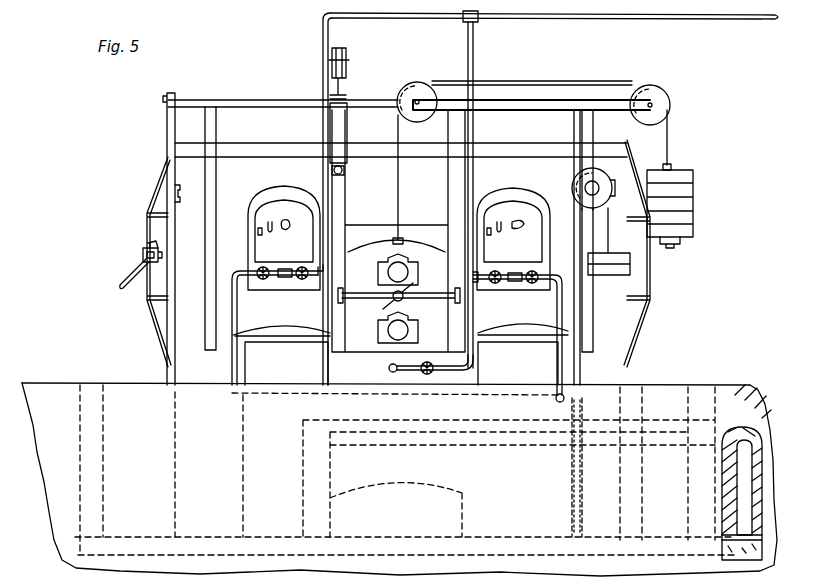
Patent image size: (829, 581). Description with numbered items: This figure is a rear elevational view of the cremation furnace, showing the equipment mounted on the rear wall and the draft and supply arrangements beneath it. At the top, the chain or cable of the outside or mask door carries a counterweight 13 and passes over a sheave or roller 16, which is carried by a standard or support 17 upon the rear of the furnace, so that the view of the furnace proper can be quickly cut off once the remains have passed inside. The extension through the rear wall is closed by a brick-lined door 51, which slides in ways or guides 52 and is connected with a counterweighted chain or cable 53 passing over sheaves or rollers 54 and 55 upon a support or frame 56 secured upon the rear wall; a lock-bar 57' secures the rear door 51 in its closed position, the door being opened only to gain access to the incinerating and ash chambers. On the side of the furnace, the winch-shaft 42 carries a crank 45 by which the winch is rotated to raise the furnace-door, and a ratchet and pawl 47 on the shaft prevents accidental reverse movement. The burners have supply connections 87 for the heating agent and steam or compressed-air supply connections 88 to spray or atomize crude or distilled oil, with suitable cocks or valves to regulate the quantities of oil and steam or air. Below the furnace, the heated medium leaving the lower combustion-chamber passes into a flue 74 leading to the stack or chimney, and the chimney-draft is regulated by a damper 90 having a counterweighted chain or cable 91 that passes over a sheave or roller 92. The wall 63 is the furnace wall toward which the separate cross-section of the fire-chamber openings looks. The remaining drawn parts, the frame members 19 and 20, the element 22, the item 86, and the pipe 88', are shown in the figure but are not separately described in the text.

The counterweight 13 is at (340, 125).
The sheave or roller 16 is at (349, 63).
The standard or support 17 is at (346, 90).
The brace 19 is at (401, 253).
The frame rail 20 is at (395, 230).
The tank 22 is at (398, 231).
The winch-shaft 42 is at (160, 250).
The crank 45 is at (126, 273).
The ratchet and pawl 47 is at (150, 248).
The brick-lined door 51 is at (410, 326).
The ways or guides 52 is at (397, 239).
The counterweighted chain or cable 53 is at (398, 165).
The sheave or roller 54 is at (417, 92).
The sheave or roller 55 is at (650, 93).
The support or frame 56 is at (585, 137).
The lock-bar 57' is at (399, 284).
The wall 63 is at (531, 86).
The flue 74 is at (742, 493).
The pipe 86 is at (470, 393).
The supply connections 87 is at (556, 324).
The steam or compressed-air supply connections 88 is at (554, 189).
The pipe 88' is at (343, 199).
The damper 90 is at (571, 490).
The counterweighted chain or cable 91 is at (581, 368).
The sheave or roller 92 is at (580, 188).